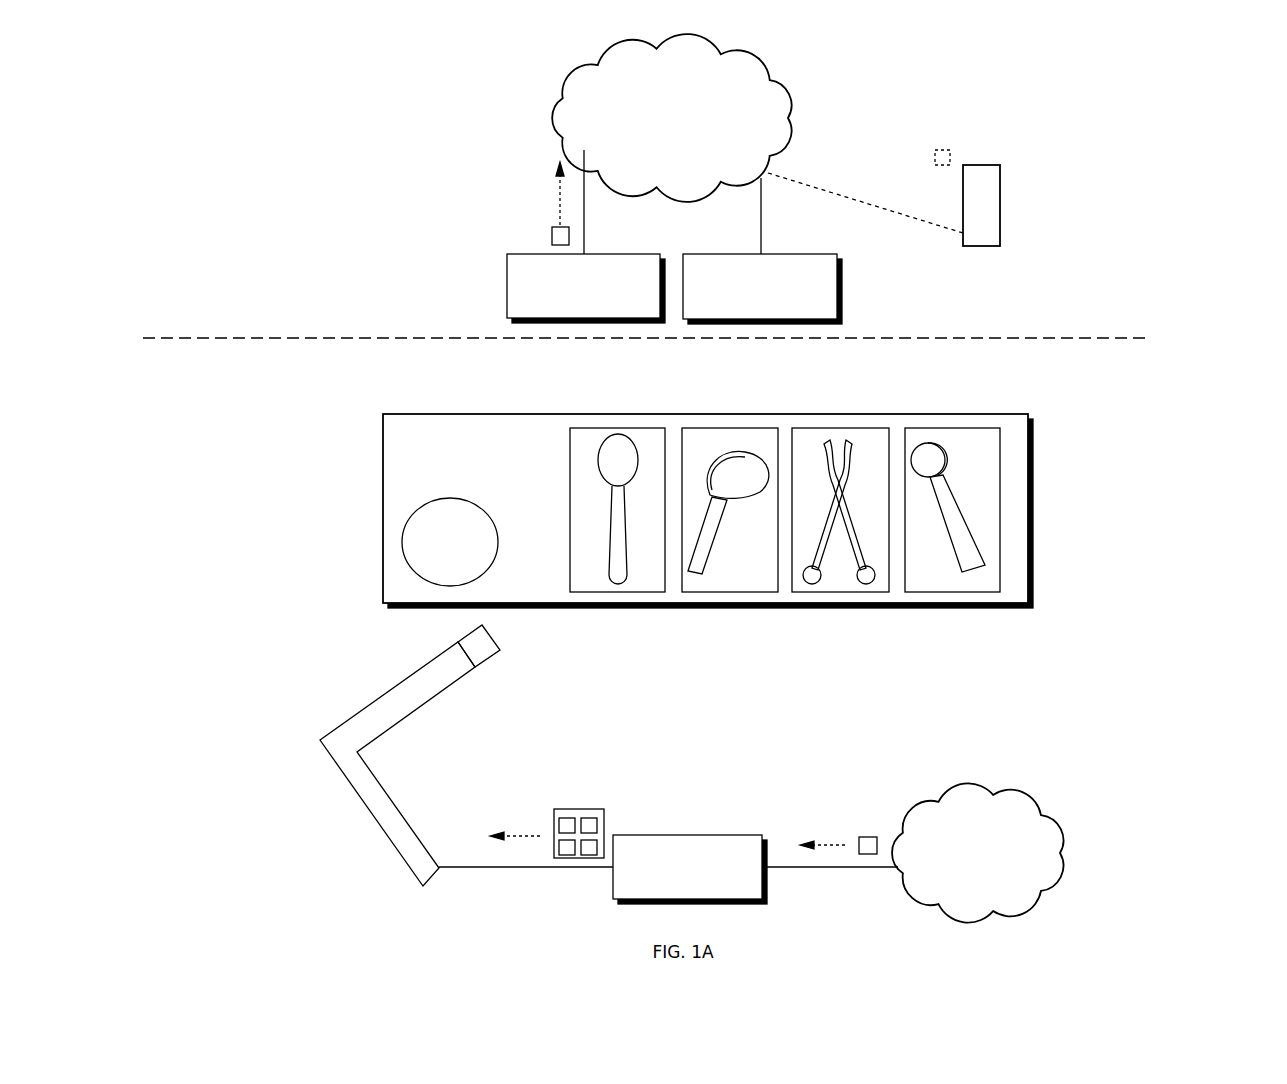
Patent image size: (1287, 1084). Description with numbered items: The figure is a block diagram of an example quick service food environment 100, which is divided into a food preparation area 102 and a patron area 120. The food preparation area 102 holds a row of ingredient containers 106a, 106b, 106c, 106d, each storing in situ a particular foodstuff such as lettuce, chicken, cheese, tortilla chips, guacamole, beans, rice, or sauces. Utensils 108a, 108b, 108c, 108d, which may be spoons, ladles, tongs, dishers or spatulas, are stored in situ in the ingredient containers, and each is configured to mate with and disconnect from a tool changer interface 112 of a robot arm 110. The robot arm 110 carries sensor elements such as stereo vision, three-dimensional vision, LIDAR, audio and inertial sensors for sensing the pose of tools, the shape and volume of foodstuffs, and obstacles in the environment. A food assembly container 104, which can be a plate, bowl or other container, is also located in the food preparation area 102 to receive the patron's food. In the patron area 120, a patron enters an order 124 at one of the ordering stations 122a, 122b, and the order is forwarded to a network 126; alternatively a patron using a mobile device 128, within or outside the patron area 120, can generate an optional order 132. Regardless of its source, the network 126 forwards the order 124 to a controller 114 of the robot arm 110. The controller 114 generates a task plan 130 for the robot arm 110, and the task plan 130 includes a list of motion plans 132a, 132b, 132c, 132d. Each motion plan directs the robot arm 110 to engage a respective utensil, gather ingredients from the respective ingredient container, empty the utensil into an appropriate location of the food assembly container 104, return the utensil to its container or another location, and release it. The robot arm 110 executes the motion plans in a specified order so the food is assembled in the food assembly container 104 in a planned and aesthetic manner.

The quick service food environment 100 is at (1213, 76).
The food preparation area 102 is at (305, 448).
The food assembly container 104 is at (405, 542).
The ingredient container 106a is at (1000, 530).
The ingredient container 106b is at (862, 592).
The ingredient container 106c is at (752, 592).
The ingredient container 106d is at (643, 592).
The utensil 108a is at (945, 455).
The utensil 108b is at (850, 445).
The utensil 108c is at (745, 462).
The utensil 108d is at (620, 455).
The robot arm 110 is at (360, 795).
The tool changer interface 112 is at (482, 640).
The controller 114 is at (675, 890).
The patron area 120 is at (219, 228).
The ordering station 122a is at (507, 288).
The ordering station 122b is at (837, 287).
The order 124 is at (552, 236).
The network 126 is at (992, 878).
The mobile device 128 is at (1000, 197).
The task plan 130 is at (554, 818).
The optional order 132 is at (942, 148).
The motion plan 132a is at (563, 818).
The motion plan 132b is at (597, 830).
The motion plan 132c is at (597, 848).
The motion plan 132d is at (560, 848).